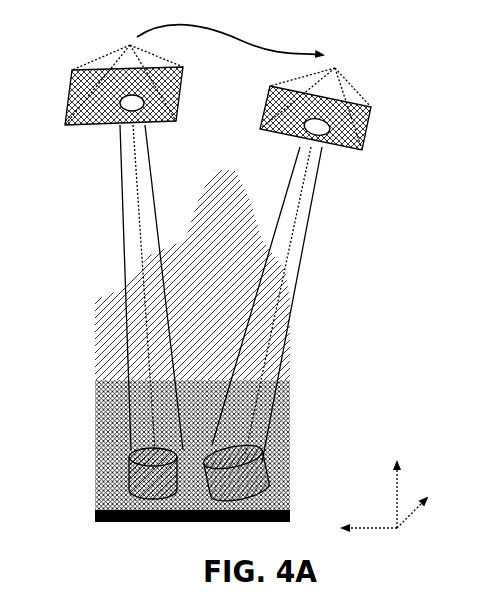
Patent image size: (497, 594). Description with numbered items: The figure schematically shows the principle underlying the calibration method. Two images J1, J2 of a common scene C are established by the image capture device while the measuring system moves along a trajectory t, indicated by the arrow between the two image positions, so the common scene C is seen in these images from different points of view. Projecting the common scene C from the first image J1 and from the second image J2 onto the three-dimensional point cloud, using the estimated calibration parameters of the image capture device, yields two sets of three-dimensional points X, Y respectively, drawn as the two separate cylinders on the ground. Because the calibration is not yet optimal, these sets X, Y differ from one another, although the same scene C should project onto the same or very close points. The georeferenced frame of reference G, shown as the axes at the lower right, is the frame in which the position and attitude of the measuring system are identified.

The common scene C is at (128, 97).
The trajectory t is at (230, 35).
The first image J1 is at (75, 127).
The second image J2 is at (343, 155).
The set of 3D points X is at (262, 462).
The set of 3D points Y is at (130, 467).
The georeferenced frame of reference G is at (395, 495).